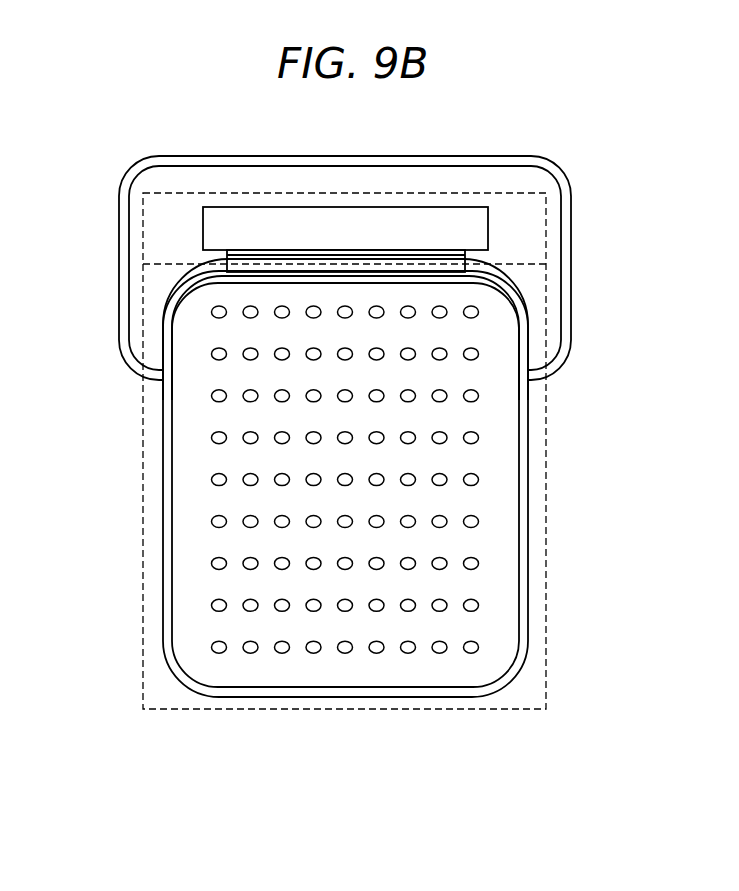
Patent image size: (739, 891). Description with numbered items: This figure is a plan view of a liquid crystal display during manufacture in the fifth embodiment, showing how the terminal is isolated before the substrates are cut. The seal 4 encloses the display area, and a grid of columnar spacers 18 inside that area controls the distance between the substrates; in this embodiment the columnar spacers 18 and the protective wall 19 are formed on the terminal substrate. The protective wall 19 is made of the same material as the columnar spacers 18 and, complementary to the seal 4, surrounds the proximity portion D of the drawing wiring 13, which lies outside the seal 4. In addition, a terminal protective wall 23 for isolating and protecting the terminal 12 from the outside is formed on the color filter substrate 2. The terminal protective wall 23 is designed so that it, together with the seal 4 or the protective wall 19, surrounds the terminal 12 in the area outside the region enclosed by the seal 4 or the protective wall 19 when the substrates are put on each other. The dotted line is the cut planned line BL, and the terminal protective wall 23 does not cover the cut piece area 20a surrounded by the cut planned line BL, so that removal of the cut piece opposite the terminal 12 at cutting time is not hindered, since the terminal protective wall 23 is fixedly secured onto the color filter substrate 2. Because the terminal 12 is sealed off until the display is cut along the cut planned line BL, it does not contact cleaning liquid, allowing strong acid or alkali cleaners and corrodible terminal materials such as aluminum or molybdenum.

The color filter substrate 2 is at (523, 682).
The seal 4 is at (523, 495).
The terminal 12 is at (293, 230).
The drawing wiring 13 is at (225, 251).
The columnar spacers 18 is at (212, 397).
The protective wall 19 is at (507, 283).
The cut piece area 20a is at (167, 228).
The terminal protective wall 23 is at (492, 163).
The cut planned line BL is at (191, 191).
The proximity portion D is at (403, 270).